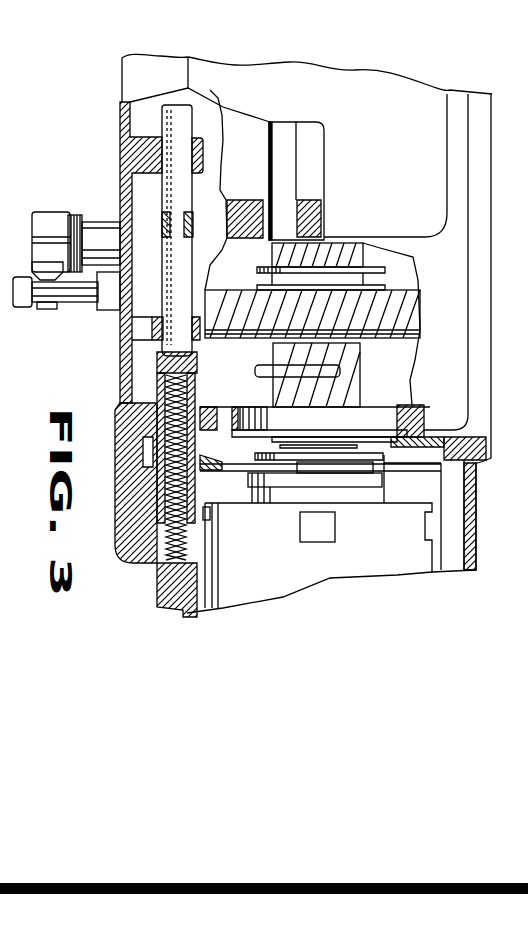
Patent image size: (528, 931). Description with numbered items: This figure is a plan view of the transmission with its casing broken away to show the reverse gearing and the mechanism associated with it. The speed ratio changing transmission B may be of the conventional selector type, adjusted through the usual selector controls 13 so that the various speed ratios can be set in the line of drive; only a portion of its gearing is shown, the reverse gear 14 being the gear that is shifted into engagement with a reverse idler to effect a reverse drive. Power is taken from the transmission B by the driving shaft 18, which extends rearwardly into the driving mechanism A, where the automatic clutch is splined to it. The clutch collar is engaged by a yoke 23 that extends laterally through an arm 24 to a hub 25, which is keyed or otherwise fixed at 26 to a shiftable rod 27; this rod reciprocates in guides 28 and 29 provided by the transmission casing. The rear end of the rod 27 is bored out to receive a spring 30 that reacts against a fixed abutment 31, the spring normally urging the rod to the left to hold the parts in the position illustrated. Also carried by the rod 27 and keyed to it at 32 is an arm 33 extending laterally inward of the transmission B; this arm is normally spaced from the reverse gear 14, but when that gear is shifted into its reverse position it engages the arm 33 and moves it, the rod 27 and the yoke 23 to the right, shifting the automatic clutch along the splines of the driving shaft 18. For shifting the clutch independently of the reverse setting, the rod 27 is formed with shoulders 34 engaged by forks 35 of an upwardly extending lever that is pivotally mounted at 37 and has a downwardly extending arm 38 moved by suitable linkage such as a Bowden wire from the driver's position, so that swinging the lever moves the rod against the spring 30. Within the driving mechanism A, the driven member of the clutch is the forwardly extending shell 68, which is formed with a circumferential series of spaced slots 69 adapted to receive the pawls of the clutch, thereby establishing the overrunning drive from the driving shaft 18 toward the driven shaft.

The selector controls 13 is at (291, 167).
The reverse gear 14 is at (409, 333).
The driving shaft 18 is at (354, 360).
The yoke 23 is at (237, 458).
The arm 24 is at (220, 458).
The hub 25 is at (157, 472).
The key 26 is at (200, 472).
The shiftable rod 27 is at (157, 390).
The guide 28 is at (150, 428).
The guide 29 is at (152, 152).
The spring 30 is at (165, 527).
The fixed abutment 31 is at (160, 568).
The key 32 is at (152, 335).
The arm 33 is at (253, 370).
The shoulders 34 is at (195, 262).
The forks 35 is at (162, 222).
The pivot 37 is at (143, 240).
The downwardly extending arm 38 is at (50, 307).
The shell 68 is at (397, 557).
The slots 69 is at (336, 525).
The driving mechanism A is at (476, 568).
The speed ratio changing transmission B is at (118, 116).